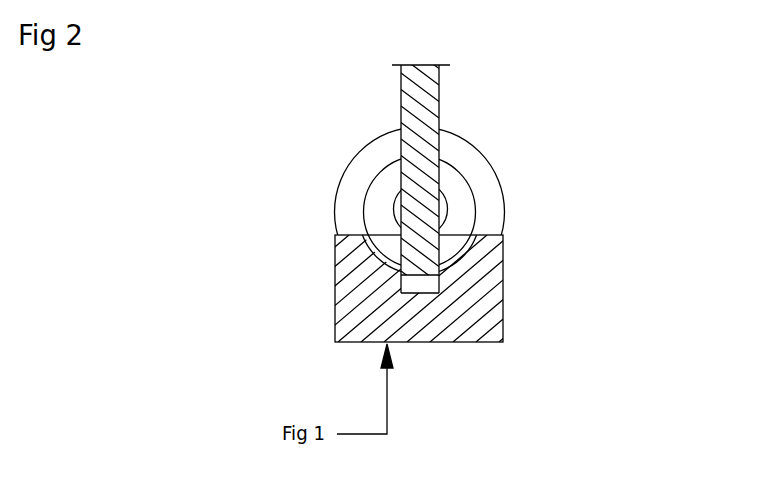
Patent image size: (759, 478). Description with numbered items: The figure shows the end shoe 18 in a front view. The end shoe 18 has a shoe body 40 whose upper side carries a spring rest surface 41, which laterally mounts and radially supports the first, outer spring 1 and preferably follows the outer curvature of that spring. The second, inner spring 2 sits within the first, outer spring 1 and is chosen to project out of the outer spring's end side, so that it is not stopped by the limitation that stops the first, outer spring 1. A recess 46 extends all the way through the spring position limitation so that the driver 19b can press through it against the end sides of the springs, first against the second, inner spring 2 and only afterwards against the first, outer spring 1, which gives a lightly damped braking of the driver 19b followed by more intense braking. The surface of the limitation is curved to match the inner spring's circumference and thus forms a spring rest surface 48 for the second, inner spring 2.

The first, outer spring 1 is at (492, 162).
The second, inner spring 2 is at (476, 200).
The end shoe 18 is at (412, 300).
The driver 19b is at (441, 83).
The shoe body 40 is at (452, 342).
The spring rest surface 41 is at (493, 252).
The recess 46 is at (440, 285).
The spring rest surface 48 is at (395, 289).